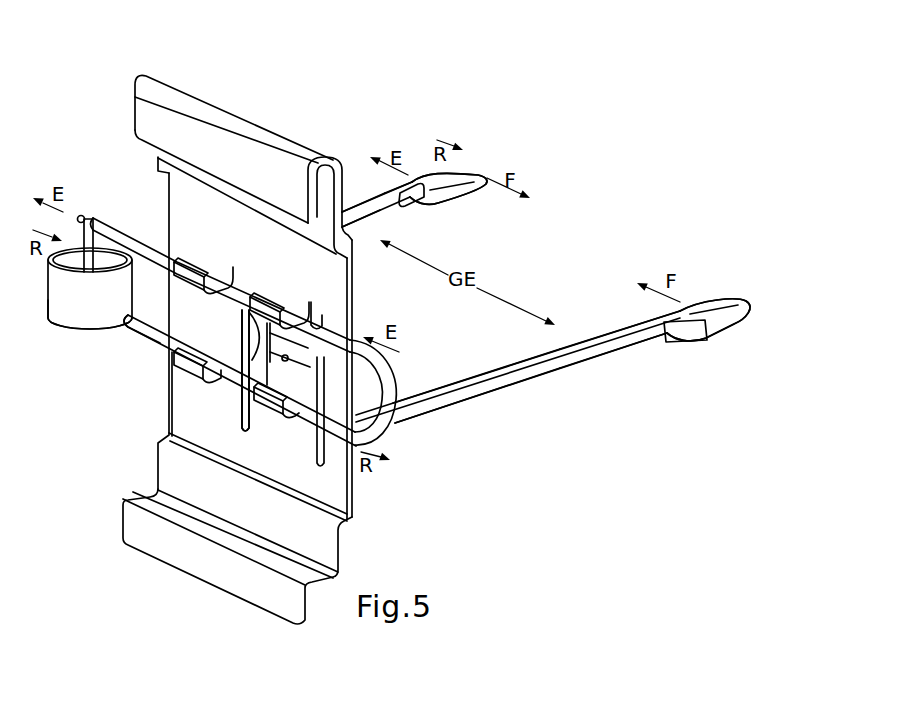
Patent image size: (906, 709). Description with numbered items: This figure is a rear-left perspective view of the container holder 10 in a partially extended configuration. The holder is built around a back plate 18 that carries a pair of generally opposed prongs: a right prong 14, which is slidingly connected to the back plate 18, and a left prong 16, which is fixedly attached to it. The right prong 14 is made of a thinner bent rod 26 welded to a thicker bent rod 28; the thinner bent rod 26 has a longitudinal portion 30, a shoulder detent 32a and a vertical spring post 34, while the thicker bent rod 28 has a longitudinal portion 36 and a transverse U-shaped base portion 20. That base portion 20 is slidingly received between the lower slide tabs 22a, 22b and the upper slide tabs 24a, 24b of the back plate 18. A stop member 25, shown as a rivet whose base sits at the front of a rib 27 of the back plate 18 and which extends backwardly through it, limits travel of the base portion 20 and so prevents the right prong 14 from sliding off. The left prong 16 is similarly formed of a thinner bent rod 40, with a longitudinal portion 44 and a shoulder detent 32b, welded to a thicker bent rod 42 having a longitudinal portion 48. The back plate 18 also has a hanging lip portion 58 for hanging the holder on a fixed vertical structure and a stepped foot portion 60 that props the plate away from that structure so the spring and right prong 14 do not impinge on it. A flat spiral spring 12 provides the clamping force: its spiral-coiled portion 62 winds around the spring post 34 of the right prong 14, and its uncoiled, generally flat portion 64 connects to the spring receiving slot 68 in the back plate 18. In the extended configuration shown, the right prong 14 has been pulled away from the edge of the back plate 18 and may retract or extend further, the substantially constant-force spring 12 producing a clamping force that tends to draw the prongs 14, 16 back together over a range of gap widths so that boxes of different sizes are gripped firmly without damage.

The container holder 10 is at (202, 316).
The flat spiral spring 12 is at (88, 331).
The right prong 14 is at (490, 157).
The left prong 16 is at (757, 302).
The back plate 18 is at (255, 347).
The U-shaped base portion 20 is at (155, 342).
The lower slide tab 22a is at (200, 379).
The lower slide tab 22b is at (280, 416).
The upper slide tab 24a is at (200, 258).
The upper slide tab 24b is at (275, 296).
The stop member 25 is at (290, 361).
The thinner bent rod 26 is at (397, 214).
The rib 27 is at (312, 320).
The thicker bent rod 28 is at (398, 188).
The longitudinal portion 30 is at (363, 220).
The shoulder detent 32a is at (455, 205).
The shoulder detent 32b is at (703, 300).
The vertical spring post 34 is at (88, 222).
The longitudinal portion 36 is at (384, 195).
The thinner bent rod 40 is at (586, 340).
The thicker bent rod 42 is at (601, 348).
The longitudinal portion 44 is at (496, 369).
The longitudinal portion 48 is at (478, 390).
The hanging lip portion 58 is at (243, 166).
The stepped foot portion 60 is at (237, 556).
The spiral-coiled portion 62 is at (90, 288).
The uncoiled flat portion 64 is at (244, 332).
The spring receiving slot 68 is at (250, 300).